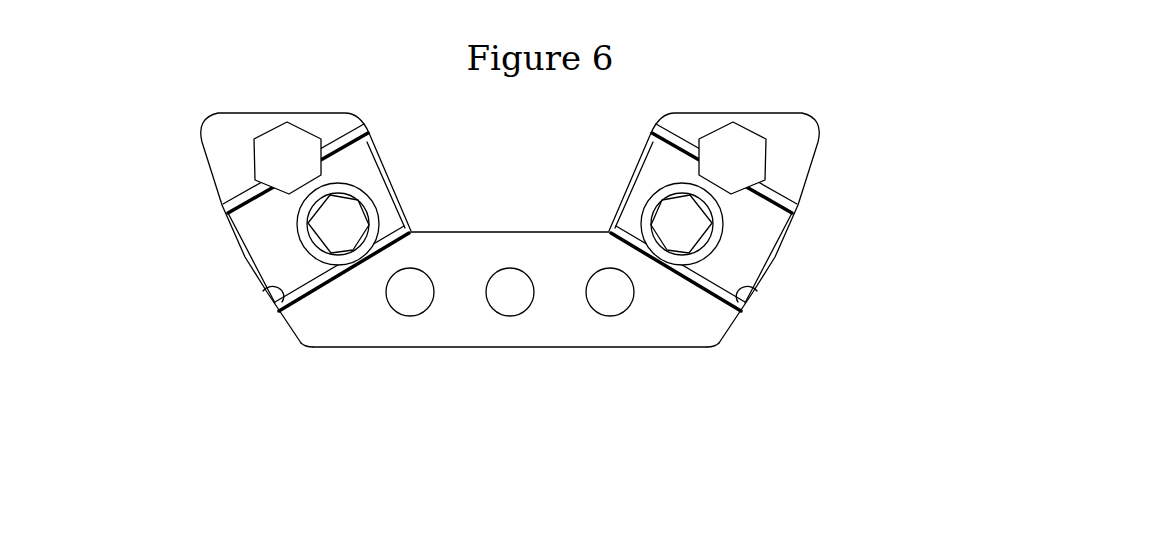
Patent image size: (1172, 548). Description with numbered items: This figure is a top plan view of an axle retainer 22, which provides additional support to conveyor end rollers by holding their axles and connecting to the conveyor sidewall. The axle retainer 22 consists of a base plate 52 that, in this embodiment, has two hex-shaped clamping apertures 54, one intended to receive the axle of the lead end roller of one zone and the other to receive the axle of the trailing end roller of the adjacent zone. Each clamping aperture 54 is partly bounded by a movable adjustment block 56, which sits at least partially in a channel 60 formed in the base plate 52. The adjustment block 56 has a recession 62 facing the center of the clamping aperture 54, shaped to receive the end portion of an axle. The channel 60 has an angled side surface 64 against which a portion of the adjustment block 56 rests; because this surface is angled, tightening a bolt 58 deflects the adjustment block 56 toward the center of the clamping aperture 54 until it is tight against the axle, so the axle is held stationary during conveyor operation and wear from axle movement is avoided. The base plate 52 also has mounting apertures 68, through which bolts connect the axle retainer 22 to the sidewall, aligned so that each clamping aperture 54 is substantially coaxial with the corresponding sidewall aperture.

The axle retainer 22 is at (1022, 112).
The base plate 52 is at (308, 348).
The clamping aperture 54 is at (262, 135).
The movable adjustment block 56 is at (356, 175).
The bolt 58 is at (350, 216).
The channel 60 is at (234, 264).
The recession 62 is at (303, 184).
The angled side surface 64 is at (263, 291).
The mounting aperture 68 is at (407, 317).